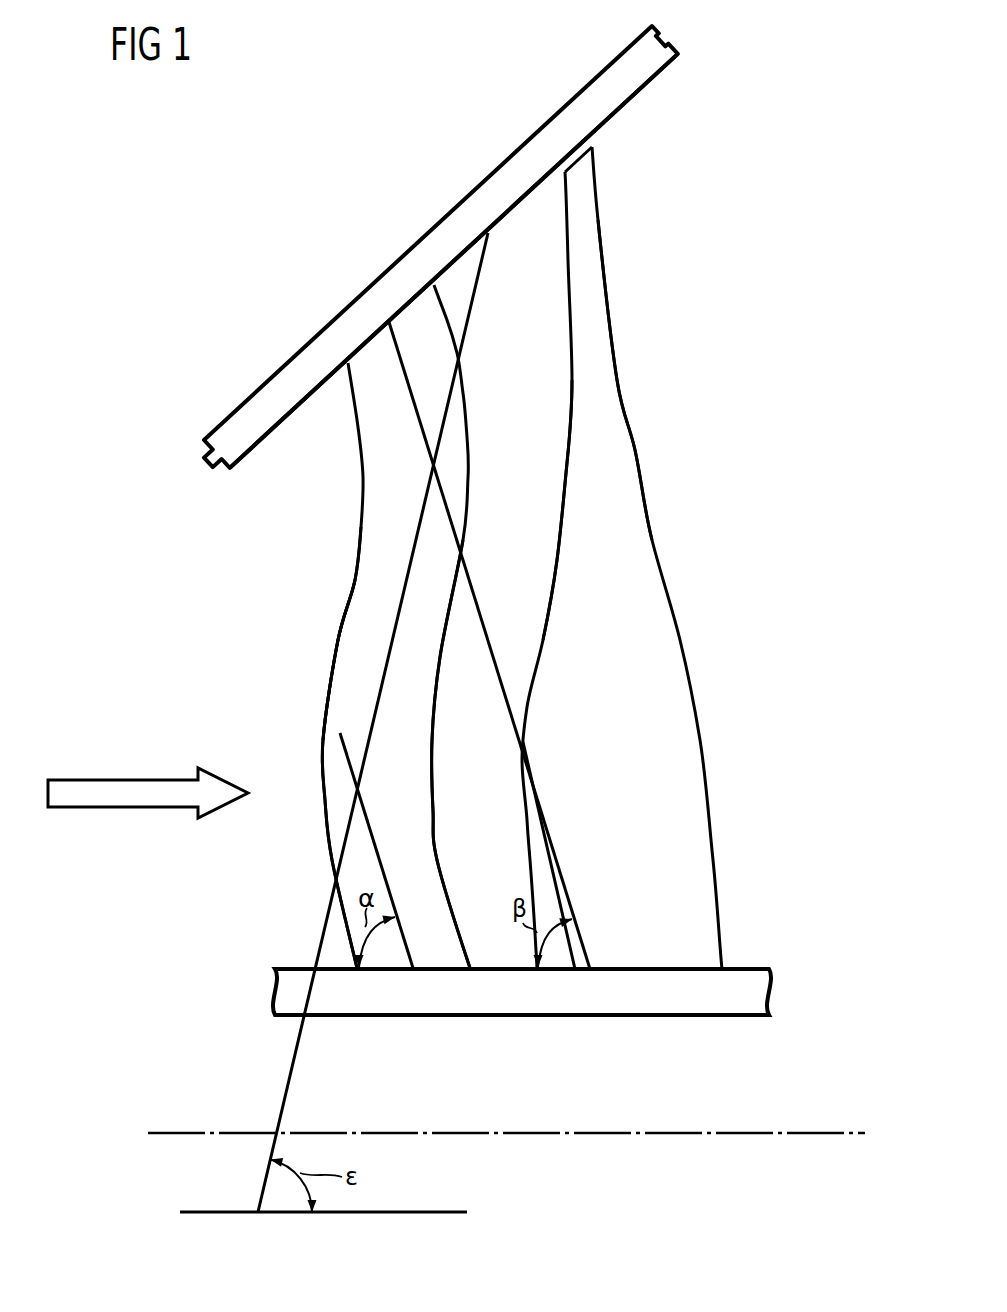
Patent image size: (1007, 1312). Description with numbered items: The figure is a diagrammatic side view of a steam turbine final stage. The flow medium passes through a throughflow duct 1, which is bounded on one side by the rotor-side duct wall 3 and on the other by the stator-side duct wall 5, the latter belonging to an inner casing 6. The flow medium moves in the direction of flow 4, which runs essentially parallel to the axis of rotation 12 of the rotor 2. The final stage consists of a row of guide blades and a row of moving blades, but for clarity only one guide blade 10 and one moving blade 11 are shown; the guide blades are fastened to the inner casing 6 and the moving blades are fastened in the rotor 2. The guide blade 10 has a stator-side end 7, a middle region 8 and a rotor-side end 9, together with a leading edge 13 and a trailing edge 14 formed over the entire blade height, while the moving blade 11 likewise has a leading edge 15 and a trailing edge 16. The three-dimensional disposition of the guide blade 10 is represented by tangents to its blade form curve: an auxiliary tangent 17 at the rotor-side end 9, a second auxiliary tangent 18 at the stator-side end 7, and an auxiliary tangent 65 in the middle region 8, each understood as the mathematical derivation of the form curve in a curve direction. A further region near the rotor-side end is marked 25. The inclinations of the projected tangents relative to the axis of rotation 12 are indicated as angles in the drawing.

The throughflow duct 1 is at (135, 653).
The rotor 2 is at (678, 998).
The rotor-side duct wall 3 is at (750, 968).
The direction of flow 4 is at (123, 792).
The stator-side duct wall 5 is at (625, 107).
The inner casing 6 is at (445, 240).
The stator-side end 7 is at (375, 370).
The middle region 8 is at (358, 647).
The rotor-side end 9 is at (358, 873).
The guide blade 10 is at (372, 582).
The moving blade 11 is at (630, 543).
The axis of rotation 12 is at (830, 1130).
The leading edge 13 is at (320, 732).
The trailing edge 14 is at (440, 673).
The leading edge 15 is at (557, 547).
The trailing edge 16 is at (630, 423).
The auxiliary tangent 17 is at (373, 847).
The second auxiliary tangent 18 is at (445, 482).
The trailing edge root section 25 is at (447, 948).
The auxiliary tangent 65 is at (293, 1063).